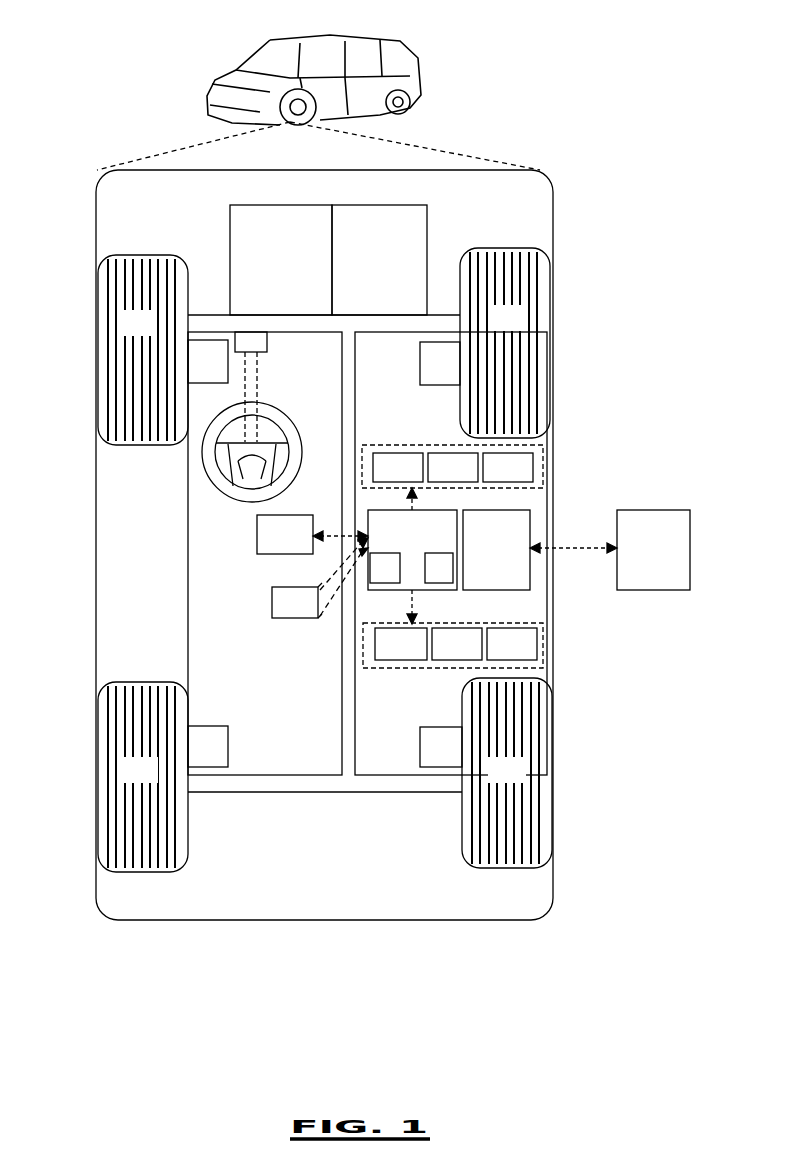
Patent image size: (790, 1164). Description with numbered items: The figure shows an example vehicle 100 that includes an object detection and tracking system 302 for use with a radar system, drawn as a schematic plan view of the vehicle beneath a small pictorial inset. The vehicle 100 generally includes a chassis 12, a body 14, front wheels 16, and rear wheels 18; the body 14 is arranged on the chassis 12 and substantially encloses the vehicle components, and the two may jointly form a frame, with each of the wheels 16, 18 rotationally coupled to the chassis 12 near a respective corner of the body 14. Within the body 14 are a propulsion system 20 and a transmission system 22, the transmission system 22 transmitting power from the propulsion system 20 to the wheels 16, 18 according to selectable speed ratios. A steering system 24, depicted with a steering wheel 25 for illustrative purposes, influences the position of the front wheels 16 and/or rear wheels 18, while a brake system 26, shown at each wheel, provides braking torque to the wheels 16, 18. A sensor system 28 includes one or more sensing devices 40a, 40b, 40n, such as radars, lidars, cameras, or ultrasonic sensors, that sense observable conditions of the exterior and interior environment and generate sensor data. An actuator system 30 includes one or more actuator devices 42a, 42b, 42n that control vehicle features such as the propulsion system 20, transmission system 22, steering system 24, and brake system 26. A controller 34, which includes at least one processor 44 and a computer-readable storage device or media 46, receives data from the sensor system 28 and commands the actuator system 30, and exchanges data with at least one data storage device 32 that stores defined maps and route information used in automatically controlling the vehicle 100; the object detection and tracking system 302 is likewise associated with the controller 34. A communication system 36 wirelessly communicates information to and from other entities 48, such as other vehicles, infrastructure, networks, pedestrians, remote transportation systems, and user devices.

The vehicle 100 is at (222, 64).
The body 14 is at (96, 512).
The chassis 12 is at (350, 792).
The front wheels 16 is at (324, 346).
The rear wheels 18 is at (325, 775).
The propulsion system 20 is at (281, 260).
The transmission system 22 is at (379, 260).
The steering system 24 is at (232, 503).
The steering wheel 25 is at (289, 408).
The brake system 26 is at (325, 553).
The sensor system 28 is at (408, 445).
The actuator system 30 is at (395, 668).
The data storage device 32 is at (312, 534).
The controller 34 is at (412, 556).
The communication system 36 is at (496, 550).
The sensing device 40a is at (398, 467).
The sensing device 40b is at (453, 467).
The sensing device 40n is at (508, 467).
The actuator device 42a is at (401, 644).
The actuator device 42b is at (457, 644).
The actuator device 42n is at (512, 644).
The processor 44 is at (385, 568).
The computer-readable storage device or media 46 is at (439, 568).
The other entities 48 is at (610, 550).
The object detection and tracking system 302 is at (320, 578).